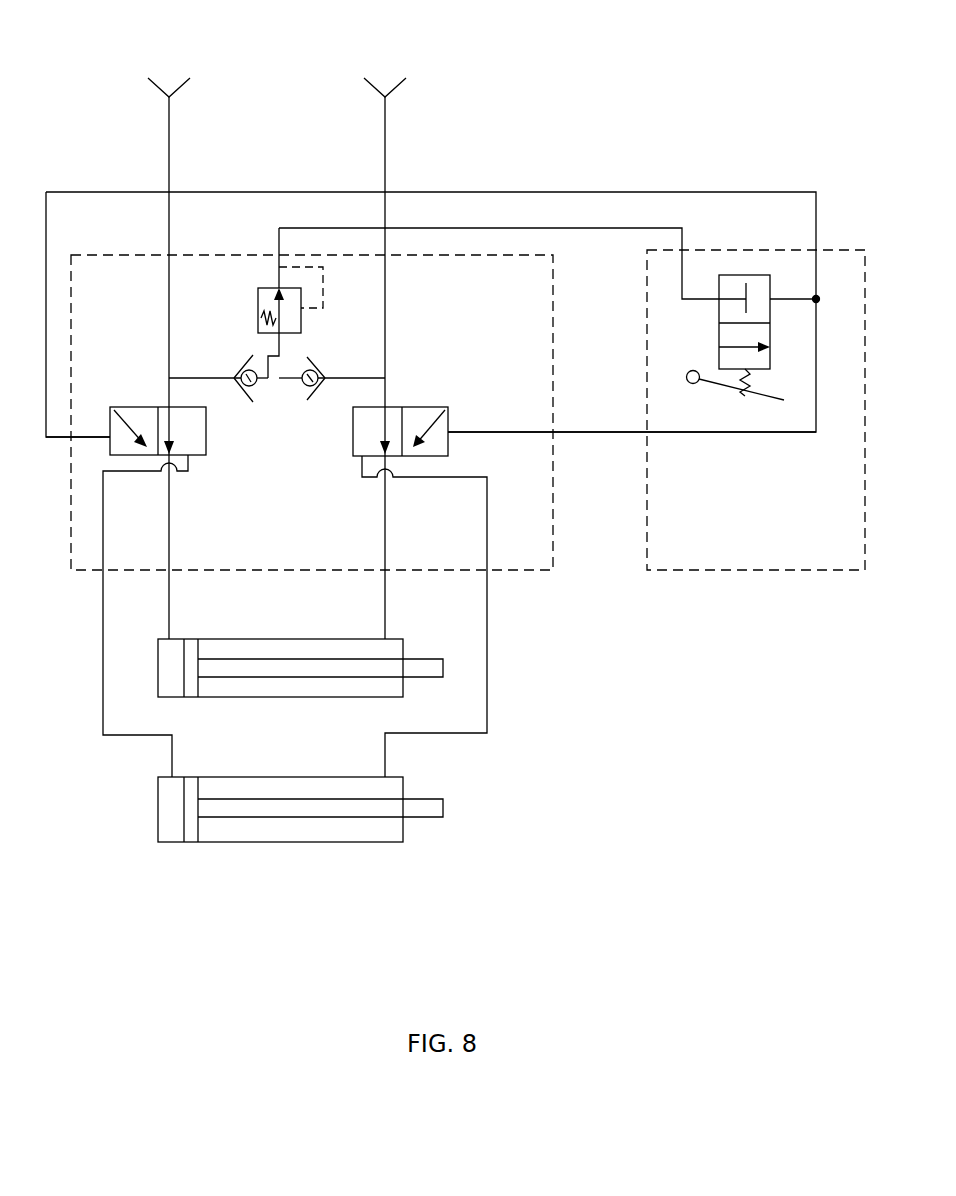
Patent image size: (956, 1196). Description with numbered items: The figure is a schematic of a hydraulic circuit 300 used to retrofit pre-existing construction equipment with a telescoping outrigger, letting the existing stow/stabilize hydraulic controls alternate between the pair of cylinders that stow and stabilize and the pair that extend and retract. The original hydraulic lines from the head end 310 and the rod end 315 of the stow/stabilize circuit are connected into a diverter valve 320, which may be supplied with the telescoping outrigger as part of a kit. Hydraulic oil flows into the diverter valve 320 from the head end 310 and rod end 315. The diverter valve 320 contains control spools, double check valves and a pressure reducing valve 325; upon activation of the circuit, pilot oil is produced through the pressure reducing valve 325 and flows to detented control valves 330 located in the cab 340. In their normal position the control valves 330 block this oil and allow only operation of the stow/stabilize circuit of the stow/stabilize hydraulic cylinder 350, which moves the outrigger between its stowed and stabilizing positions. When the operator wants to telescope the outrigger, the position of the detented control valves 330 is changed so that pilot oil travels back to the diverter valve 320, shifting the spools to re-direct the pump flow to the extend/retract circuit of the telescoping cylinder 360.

The hydraulic control system 300 is at (499, 98).
The head end 310 is at (176, 85).
The rod end 315 is at (392, 85).
The diverter valve 320 is at (68, 530).
The pressure reducing valve 325 is at (303, 333).
The control valves 330 is at (672, 318).
The cab 340 is at (745, 572).
The stow/stabilize hydraulic cylinder 350 is at (158, 668).
The telescoping cylinder 360 is at (158, 806).